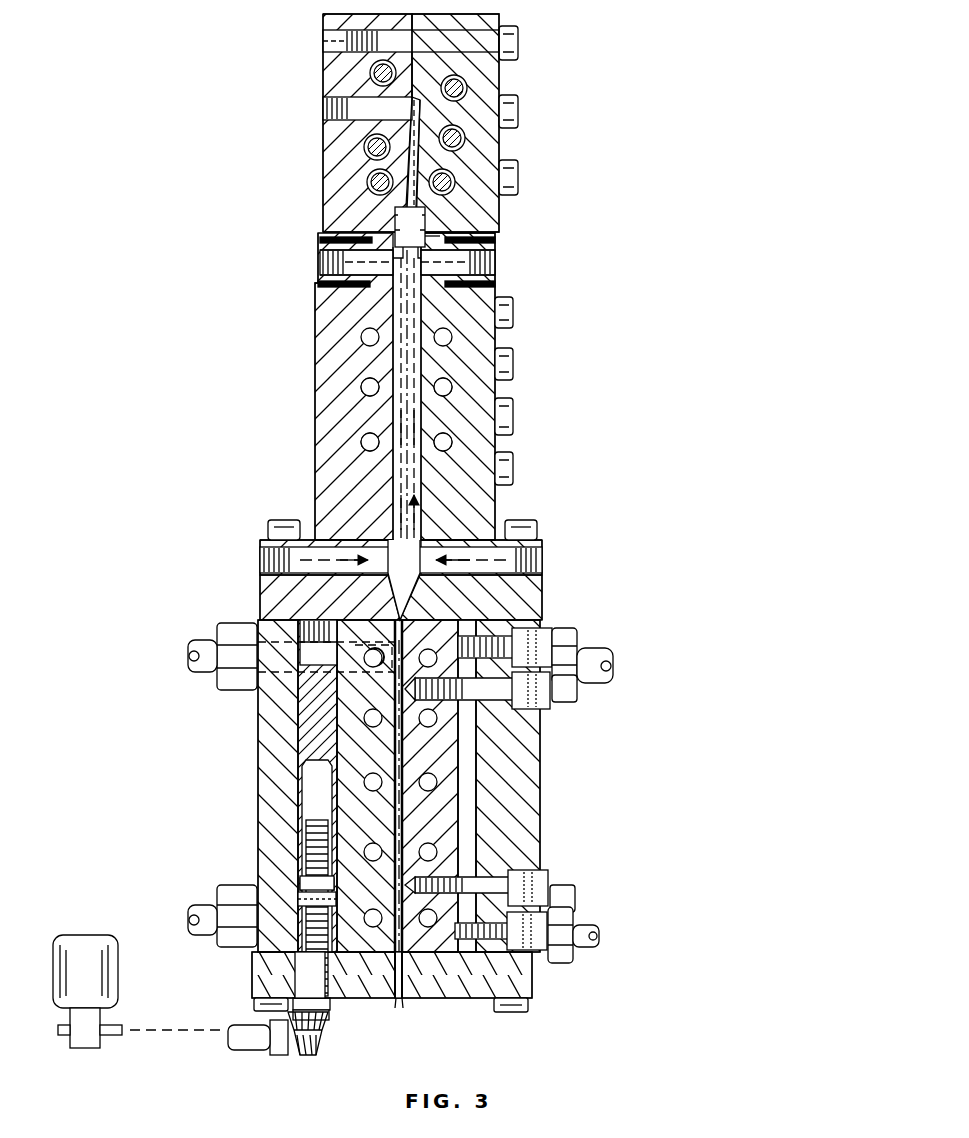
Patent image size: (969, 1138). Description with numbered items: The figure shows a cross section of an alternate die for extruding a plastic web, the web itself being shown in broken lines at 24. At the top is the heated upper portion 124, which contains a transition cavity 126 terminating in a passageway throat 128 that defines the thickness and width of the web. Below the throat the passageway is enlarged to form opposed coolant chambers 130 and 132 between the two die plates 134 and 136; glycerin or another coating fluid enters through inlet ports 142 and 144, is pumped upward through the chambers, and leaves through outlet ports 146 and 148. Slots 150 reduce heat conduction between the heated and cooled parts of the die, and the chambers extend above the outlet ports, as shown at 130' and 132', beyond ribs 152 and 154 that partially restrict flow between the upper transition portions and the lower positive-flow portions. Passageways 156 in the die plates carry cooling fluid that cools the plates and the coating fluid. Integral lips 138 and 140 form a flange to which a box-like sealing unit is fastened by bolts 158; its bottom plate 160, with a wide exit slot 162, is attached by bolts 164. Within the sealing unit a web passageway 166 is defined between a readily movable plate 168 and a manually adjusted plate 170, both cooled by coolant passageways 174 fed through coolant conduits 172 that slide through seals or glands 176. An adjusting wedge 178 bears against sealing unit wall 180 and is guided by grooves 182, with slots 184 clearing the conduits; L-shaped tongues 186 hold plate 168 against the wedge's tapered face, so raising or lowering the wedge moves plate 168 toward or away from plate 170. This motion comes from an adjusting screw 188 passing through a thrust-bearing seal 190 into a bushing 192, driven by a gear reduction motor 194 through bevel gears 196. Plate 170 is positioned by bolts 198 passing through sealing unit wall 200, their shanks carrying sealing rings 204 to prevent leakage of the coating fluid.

The plastic web 24 is at (415, 500).
The heated upper portion 124 is at (500, 86).
The transition cavity 126 is at (420, 160).
The passageway throat 128 is at (400, 210).
The coolant chamber 130 is at (327, 393).
The upper portion of coolant chamber 130' is at (318, 209).
The coolant chamber 132 is at (490, 393).
The upper portion of coolant chamber 132' is at (488, 211).
The die plate 134 is at (330, 316).
The die plate 136 is at (480, 316).
The integral lip 138 is at (272, 542).
The integral lip 140 is at (540, 541).
The inlet port 142 is at (270, 570).
The inlet port 144 is at (548, 572).
The outlet port 146 is at (320, 262).
The outlet port 148 is at (496, 272).
The slots 150 is at (322, 240).
The rib 152 is at (400, 228).
The rib 154 is at (425, 240).
The passageways 156 is at (362, 440).
The bolts 158 is at (285, 520).
The bottom plate 160 is at (428, 990).
The exit slot 162 is at (396, 985).
The bolts 164 is at (256, 1003).
The web passageway 166 is at (545, 810).
The plate 168 is at (310, 762).
The plate 170 is at (500, 760).
The coolant conduits 172 is at (190, 660).
The coolant passageways 174 is at (264, 560).
The seals or glands 176 is at (226, 692).
The adjusting wedge 178 is at (352, 765).
The sealing unit wall 180 is at (280, 800).
The grooves 182 is at (300, 625).
The slots 184 is at (330, 712).
The L-shaped tongues 186 is at (392, 600).
The adjusting screw 188 is at (302, 870).
The thrust-bearing seal 190 is at (302, 975).
The bushing 192 is at (300, 895).
The gear reduction motor 194 is at (82, 1050).
The bevel gears 196 is at (314, 1055).
The bolts 198 is at (550, 706).
The sealing unit wall 200 is at (510, 790).
The sealing rings 204 is at (535, 634).